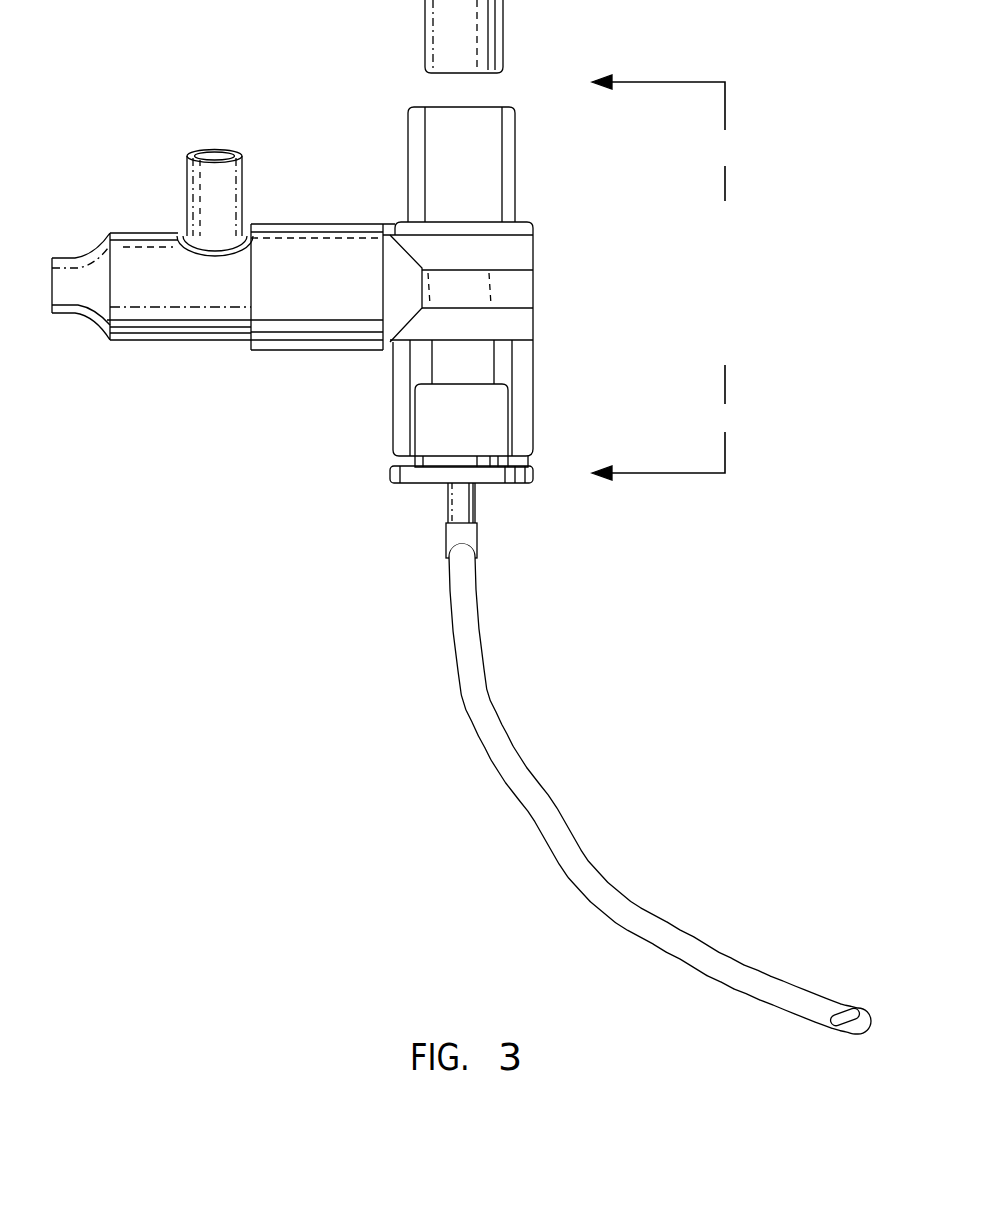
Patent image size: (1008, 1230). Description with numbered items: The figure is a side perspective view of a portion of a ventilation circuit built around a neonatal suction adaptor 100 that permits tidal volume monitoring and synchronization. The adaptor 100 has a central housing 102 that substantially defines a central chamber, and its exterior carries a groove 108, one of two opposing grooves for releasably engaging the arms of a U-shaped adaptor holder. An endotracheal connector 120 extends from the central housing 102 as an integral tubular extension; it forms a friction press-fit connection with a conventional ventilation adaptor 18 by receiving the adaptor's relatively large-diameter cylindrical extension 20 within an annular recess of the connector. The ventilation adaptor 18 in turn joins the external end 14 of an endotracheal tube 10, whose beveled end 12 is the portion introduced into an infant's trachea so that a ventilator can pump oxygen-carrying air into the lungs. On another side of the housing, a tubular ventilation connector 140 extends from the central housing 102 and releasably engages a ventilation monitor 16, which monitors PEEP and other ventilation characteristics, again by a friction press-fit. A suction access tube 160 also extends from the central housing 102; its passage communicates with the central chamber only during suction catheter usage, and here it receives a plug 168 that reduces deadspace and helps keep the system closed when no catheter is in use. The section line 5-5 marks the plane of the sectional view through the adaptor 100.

The section line 5- 5 is at (652, 279).
The endotracheal tube 10 is at (537, 817).
The beveled end 12 is at (848, 1010).
The external end 14 is at (478, 540).
The monitor 16 is at (168, 291).
The ventilation adaptor 18 is at (483, 474).
The cylindrical extension 20 is at (449, 420).
The neonatal suction adaptor 100 is at (517, 192).
The central housing 102 is at (507, 250).
The groove 108 is at (505, 290).
The endotracheal connector 120 is at (518, 377).
The ventilation connector 140 is at (397, 316).
The suction access tube 160 is at (507, 155).
The plug 168 is at (453, 13).